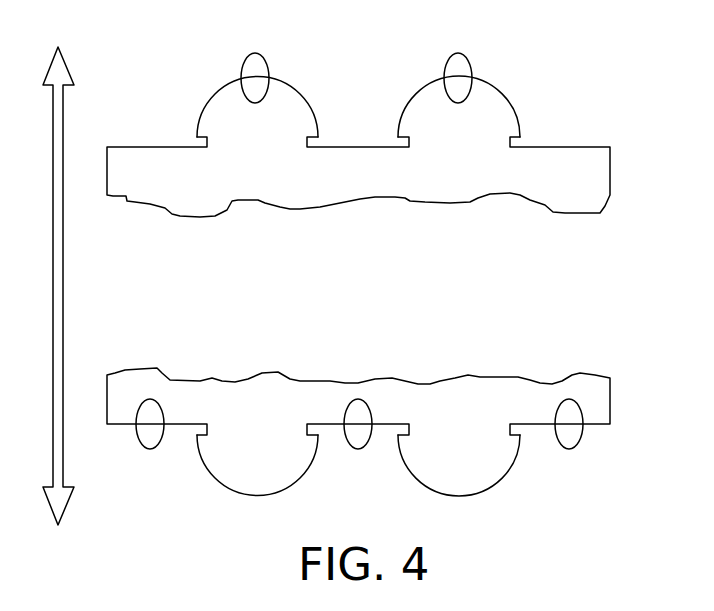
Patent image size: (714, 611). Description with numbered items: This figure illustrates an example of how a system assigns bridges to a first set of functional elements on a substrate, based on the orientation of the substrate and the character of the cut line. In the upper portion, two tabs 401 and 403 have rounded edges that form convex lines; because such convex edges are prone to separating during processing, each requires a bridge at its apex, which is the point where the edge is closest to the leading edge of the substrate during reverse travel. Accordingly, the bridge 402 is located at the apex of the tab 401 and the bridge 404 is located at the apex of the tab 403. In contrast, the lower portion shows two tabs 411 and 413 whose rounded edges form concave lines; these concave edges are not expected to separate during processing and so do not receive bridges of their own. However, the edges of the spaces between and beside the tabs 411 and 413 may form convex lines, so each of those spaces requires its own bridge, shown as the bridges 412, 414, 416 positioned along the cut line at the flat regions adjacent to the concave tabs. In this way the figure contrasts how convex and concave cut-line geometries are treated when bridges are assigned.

The tab 401 is at (508, 100).
The bridge 402 is at (459, 54).
The tab 403 is at (306, 100).
The bridge 404 is at (254, 53).
The tab 411 is at (457, 455).
The bridge 412 is at (569, 449).
The tab 413 is at (258, 455).
The bridge 414 is at (358, 449).
The bridge 416 is at (152, 449).